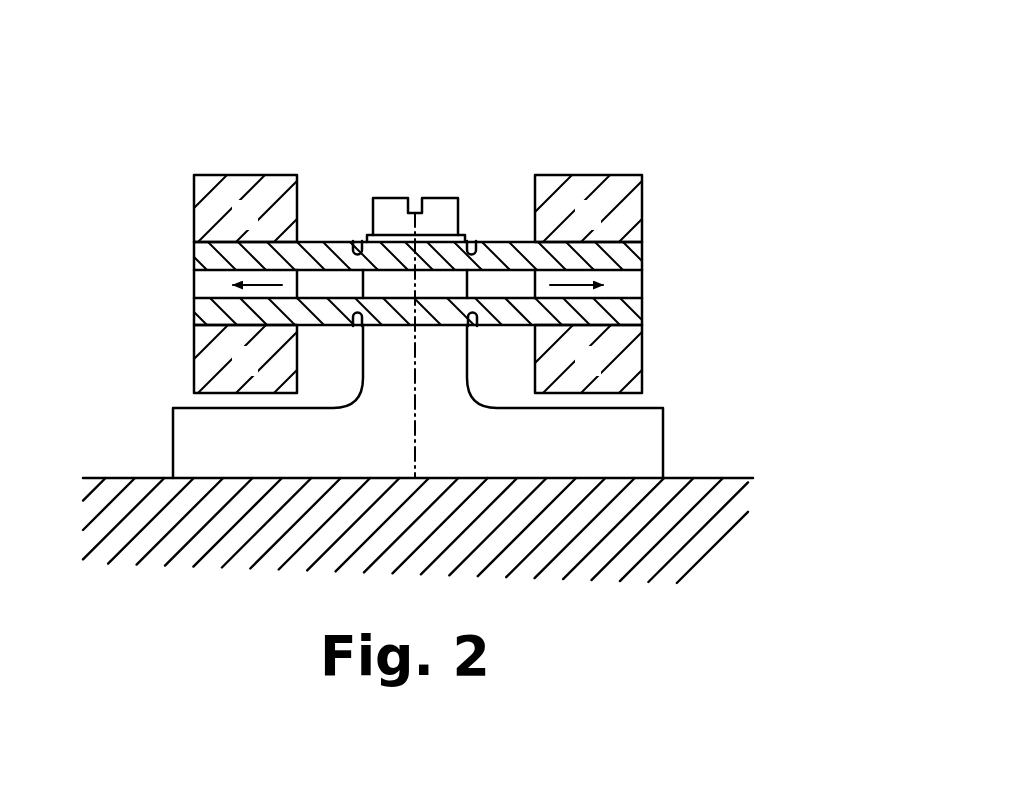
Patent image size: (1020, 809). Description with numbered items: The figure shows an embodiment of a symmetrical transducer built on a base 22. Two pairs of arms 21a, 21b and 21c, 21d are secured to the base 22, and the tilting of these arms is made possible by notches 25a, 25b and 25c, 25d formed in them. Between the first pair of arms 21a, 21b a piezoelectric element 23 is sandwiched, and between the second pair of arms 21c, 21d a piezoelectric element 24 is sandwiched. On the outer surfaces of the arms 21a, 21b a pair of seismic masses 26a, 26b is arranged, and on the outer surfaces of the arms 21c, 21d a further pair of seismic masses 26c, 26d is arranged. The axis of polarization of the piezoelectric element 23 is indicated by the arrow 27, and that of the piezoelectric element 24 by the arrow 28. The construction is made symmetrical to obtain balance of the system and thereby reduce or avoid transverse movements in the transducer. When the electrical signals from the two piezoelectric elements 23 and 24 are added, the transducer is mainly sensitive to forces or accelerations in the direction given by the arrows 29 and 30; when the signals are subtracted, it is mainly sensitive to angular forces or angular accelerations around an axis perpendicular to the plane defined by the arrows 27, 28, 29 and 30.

The arm 21a is at (204, 254).
The arm 21b is at (211, 311).
The arm 21c is at (623, 314).
The arm 21d is at (622, 262).
The base 22 is at (632, 440).
The piezoelectric element 23 is at (208, 279).
The piezoelectric element 24 is at (629, 279).
The notch 25a is at (358, 239).
The notch 25b is at (357, 331).
The notch 25c is at (474, 331).
The notch 25d is at (472, 239).
The seismic mass 26a is at (213, 190).
The seismic mass 26b is at (219, 372).
The seismic mass 26c is at (566, 372).
The seismic mass 26d is at (578, 188).
The arrow 27 is at (244, 280).
The arrow 28 is at (567, 280).
The arrow 29 is at (256, 0).
The arrow 30 is at (578, 0).